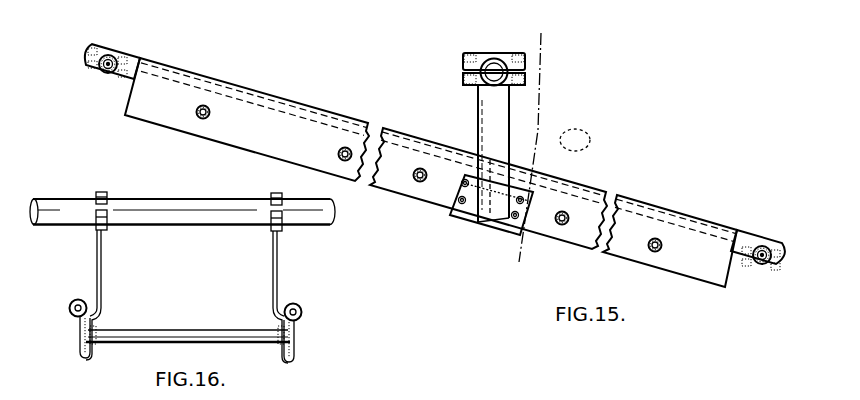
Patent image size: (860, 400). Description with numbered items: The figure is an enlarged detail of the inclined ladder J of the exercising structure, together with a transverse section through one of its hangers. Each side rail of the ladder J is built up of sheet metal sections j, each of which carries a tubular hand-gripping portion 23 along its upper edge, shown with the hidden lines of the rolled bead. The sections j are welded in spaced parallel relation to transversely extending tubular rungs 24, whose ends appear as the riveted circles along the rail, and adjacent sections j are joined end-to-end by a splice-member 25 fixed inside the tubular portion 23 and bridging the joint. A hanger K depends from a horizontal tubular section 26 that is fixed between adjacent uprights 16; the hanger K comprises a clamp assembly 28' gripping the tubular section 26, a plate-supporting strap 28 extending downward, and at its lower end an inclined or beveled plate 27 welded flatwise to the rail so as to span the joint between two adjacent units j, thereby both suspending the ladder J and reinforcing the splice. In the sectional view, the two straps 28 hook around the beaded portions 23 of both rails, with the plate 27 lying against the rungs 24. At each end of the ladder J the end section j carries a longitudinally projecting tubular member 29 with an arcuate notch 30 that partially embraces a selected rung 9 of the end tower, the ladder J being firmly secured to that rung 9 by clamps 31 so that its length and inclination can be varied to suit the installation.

In FIG. 15, the ladder rung 9 is at (106, 74).
In FIG. 15, the uprights or posts 16 is at (545, 42).
In FIG. 15, the tubular hand-gripping portions 23 is at (284, 103).
In FIG. 16, the tubular hand-gripping portions 23 is at (74, 301).
In FIG. 15, the tubular bars or rungs 24 is at (200, 119).
In FIG. 16, the tubular bars or rungs 24 is at (200, 328).
In FIG. 15, the splice-members 25 is at (522, 173).
In FIG. 15, the tubular sections 26 is at (498, 54).
In FIG. 16, the tubular sections 26 is at (181, 224).
In FIG. 15, the inclined or beveled plate 27 is at (470, 213).
In FIG. 16, the inclined or beveled plate 27 is at (97, 330).
In FIG. 15, the plate-supporting strap 28 is at (463, 155).
In FIG. 16, the plate-supporting strap 28 is at (187, 296).
In FIG. 15, the clamp assembly 28' is at (489, 51).
In FIG. 16, the clamp assembly 28' is at (191, 196).
In FIG. 15, the tubular members 29 is at (132, 57).
In FIG. 15, the arcuate notch 30 is at (108, 56).
In FIG. 15, the clamps 31 is at (86, 67).
In FIG. 15, the inclined ladder J is at (603, 179).
In FIG. 16, the inclined ladder J is at (123, 343).
In FIG. 15, the sheet metal sections j is at (298, 137).
In FIG. 16, the sheet metal sections j is at (80, 328).
In FIG. 15, the hangers K is at (483, 104).
In FIG. 16, the hangers K is at (102, 271).